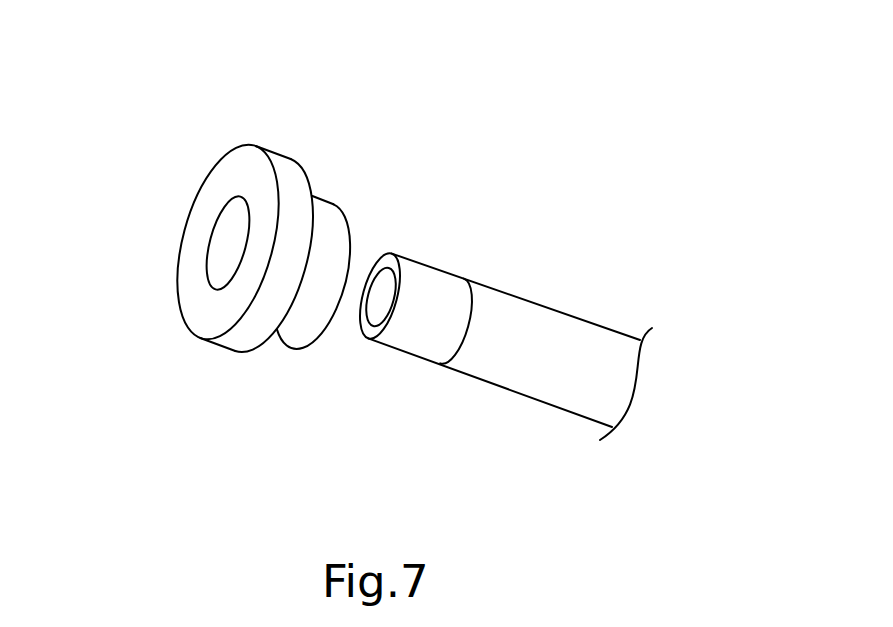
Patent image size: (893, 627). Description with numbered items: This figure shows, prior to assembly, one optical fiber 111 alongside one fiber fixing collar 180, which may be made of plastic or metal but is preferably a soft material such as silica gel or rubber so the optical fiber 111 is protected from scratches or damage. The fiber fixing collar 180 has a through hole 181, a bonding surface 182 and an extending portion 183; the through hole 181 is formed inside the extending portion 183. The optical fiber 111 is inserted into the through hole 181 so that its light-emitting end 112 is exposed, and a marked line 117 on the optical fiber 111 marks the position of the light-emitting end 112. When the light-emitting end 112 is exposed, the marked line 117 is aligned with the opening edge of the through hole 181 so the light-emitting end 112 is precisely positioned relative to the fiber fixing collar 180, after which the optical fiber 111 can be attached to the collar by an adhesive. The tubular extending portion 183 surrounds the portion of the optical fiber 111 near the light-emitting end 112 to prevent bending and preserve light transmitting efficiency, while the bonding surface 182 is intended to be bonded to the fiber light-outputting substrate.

The optical fiber 111 is at (502, 327).
The light-emitting end 112 is at (430, 280).
The marked line 117 is at (448, 368).
The fiber fixing collar 180 is at (214, 251).
The through hole 181 is at (228, 215).
The bonding surface 182 is at (209, 305).
The extending portion 183 is at (304, 330).